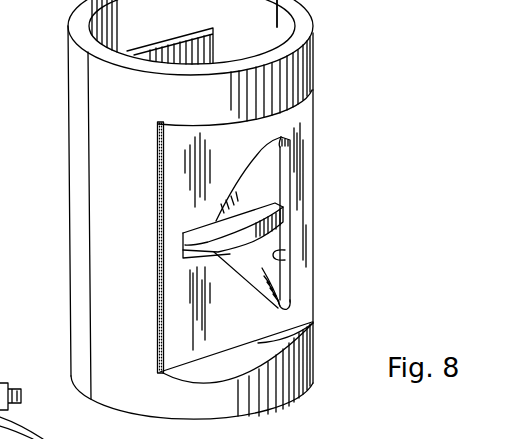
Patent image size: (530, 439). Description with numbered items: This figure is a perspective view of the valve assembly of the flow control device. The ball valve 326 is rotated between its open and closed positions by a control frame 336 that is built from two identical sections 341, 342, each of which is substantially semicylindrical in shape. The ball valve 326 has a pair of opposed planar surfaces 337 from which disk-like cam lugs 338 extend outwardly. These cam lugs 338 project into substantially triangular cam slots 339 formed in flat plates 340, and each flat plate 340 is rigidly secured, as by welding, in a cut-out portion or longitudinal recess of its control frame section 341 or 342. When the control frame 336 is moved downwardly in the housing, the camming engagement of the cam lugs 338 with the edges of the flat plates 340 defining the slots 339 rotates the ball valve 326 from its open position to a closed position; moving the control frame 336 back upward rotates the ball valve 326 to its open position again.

The section of the frame 341 is at (71, 73).
The control frame 336 is at (323, 73).
The ball valve 326 is at (265, 168).
The planar surfaces 337 is at (258, 192).
The cam lugs 338 is at (283, 227).
The cam slots 339 is at (285, 257).
The flat plates 340 is at (307, 294).
The section of the frame 342 is at (262, 405).